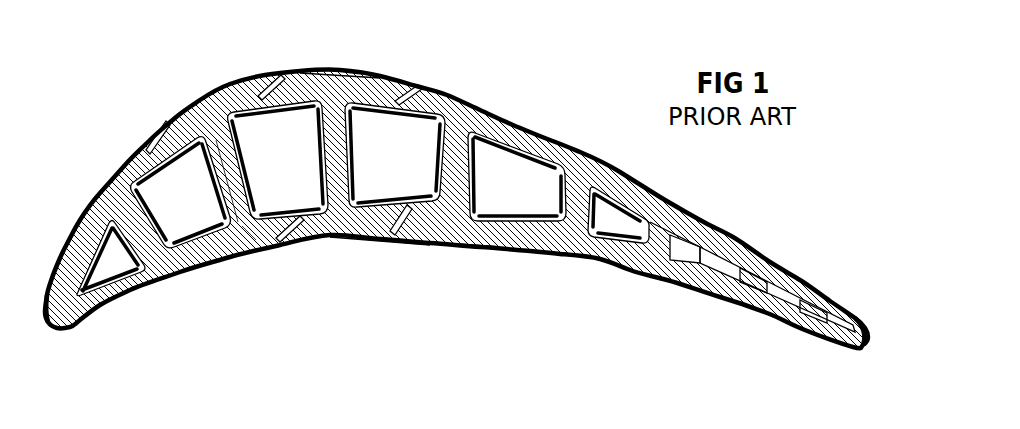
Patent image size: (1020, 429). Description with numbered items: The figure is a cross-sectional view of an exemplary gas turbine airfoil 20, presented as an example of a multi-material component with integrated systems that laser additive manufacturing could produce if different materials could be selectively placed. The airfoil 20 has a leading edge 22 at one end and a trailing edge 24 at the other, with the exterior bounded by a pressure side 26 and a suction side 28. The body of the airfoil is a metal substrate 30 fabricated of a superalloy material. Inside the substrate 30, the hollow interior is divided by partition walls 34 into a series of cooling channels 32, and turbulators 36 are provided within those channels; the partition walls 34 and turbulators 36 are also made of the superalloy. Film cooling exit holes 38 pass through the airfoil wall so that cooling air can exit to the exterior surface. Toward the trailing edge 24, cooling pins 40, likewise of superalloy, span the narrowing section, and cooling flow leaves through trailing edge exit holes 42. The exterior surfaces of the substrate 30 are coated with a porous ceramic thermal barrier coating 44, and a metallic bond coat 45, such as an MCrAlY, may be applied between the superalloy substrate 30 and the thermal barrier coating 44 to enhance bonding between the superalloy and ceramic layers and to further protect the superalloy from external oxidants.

The gas turbine airfoil 20 is at (564, 111).
The leading edge 22 is at (55, 320).
The trailing edge 24 is at (863, 343).
The pressure side 26 is at (367, 237).
The suction side 28 is at (357, 73).
The metal substrate 30 is at (248, 233).
The cooling channels 32 is at (378, 164).
The partition walls 34 is at (230, 177).
The turbulators 36 is at (217, 180).
The film cooling exit holes 38 is at (273, 95).
The cooling pins 40 is at (683, 252).
The trailing edge exit holes 42 is at (782, 298).
The thermal barrier coating 44 is at (480, 246).
The metallic bond coat 45 is at (528, 248).